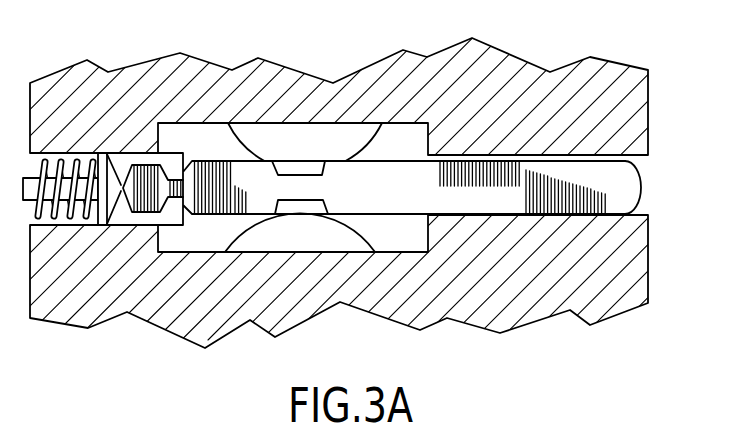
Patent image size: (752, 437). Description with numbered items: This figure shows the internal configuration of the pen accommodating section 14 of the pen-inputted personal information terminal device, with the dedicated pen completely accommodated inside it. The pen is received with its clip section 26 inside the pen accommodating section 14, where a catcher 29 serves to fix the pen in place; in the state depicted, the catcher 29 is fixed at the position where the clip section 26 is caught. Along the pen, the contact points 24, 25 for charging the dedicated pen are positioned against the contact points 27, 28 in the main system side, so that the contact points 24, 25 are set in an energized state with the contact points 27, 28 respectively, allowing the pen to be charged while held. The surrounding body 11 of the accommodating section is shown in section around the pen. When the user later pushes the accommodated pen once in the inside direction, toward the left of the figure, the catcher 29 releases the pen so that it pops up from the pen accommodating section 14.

The lower housing block 11 is at (650, 260).
The pen accommodating section 14 is at (643, 214).
The contact point for charging 24 is at (326, 200).
The contact point for charging 25 is at (314, 168).
The clip section 26 is at (627, 187).
The contact point in the main system side 27 is at (252, 159).
The contact point in the main system side 28 is at (230, 217).
The catcher 29 is at (142, 156).